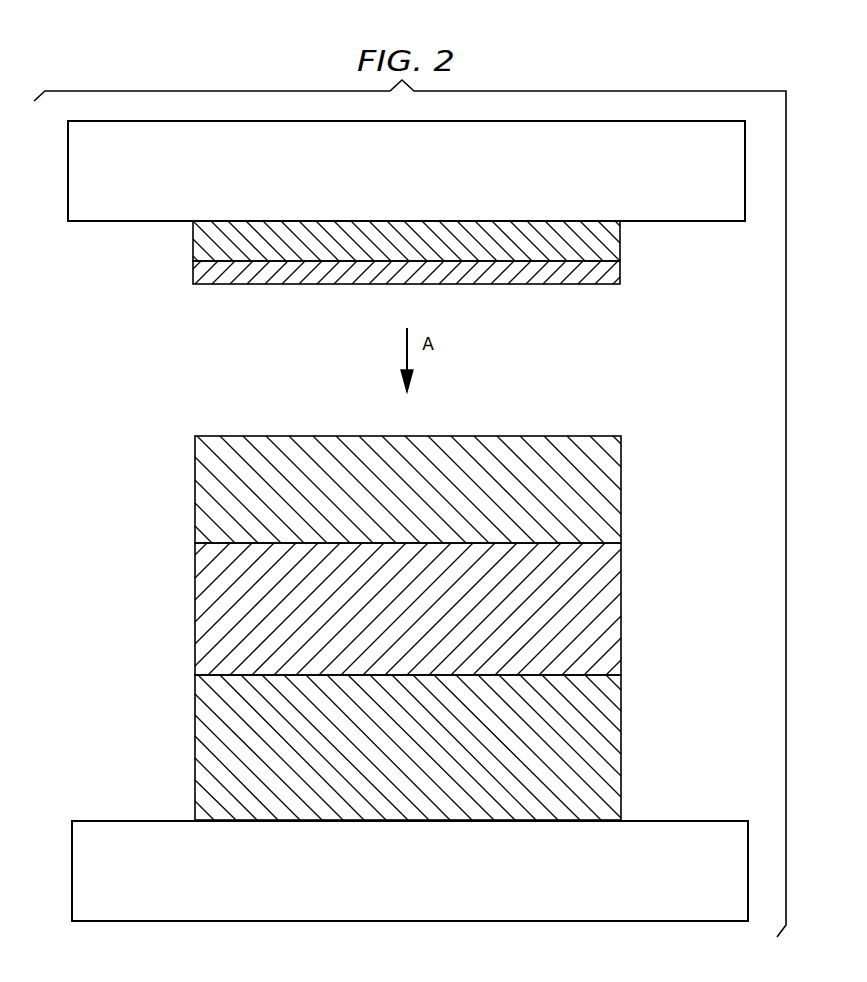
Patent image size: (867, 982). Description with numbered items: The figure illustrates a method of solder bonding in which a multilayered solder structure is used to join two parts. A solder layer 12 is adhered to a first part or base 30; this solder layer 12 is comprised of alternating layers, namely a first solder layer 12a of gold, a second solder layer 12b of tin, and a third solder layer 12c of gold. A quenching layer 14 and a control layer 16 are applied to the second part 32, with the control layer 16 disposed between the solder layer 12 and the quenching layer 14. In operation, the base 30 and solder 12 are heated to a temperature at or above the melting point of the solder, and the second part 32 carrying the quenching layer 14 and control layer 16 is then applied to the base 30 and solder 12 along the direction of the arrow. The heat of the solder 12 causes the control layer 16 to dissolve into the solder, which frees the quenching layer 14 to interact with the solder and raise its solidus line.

The solder layer 12 is at (467, 626).
The first solder layer 12a is at (438, 747).
The second solder layer 12b is at (608, 612).
The third solder layer 12c is at (608, 497).
The quenching layer 14 is at (609, 228).
The control layer 16 is at (610, 270).
The base 30 is at (731, 835).
The second part 32 is at (727, 200).